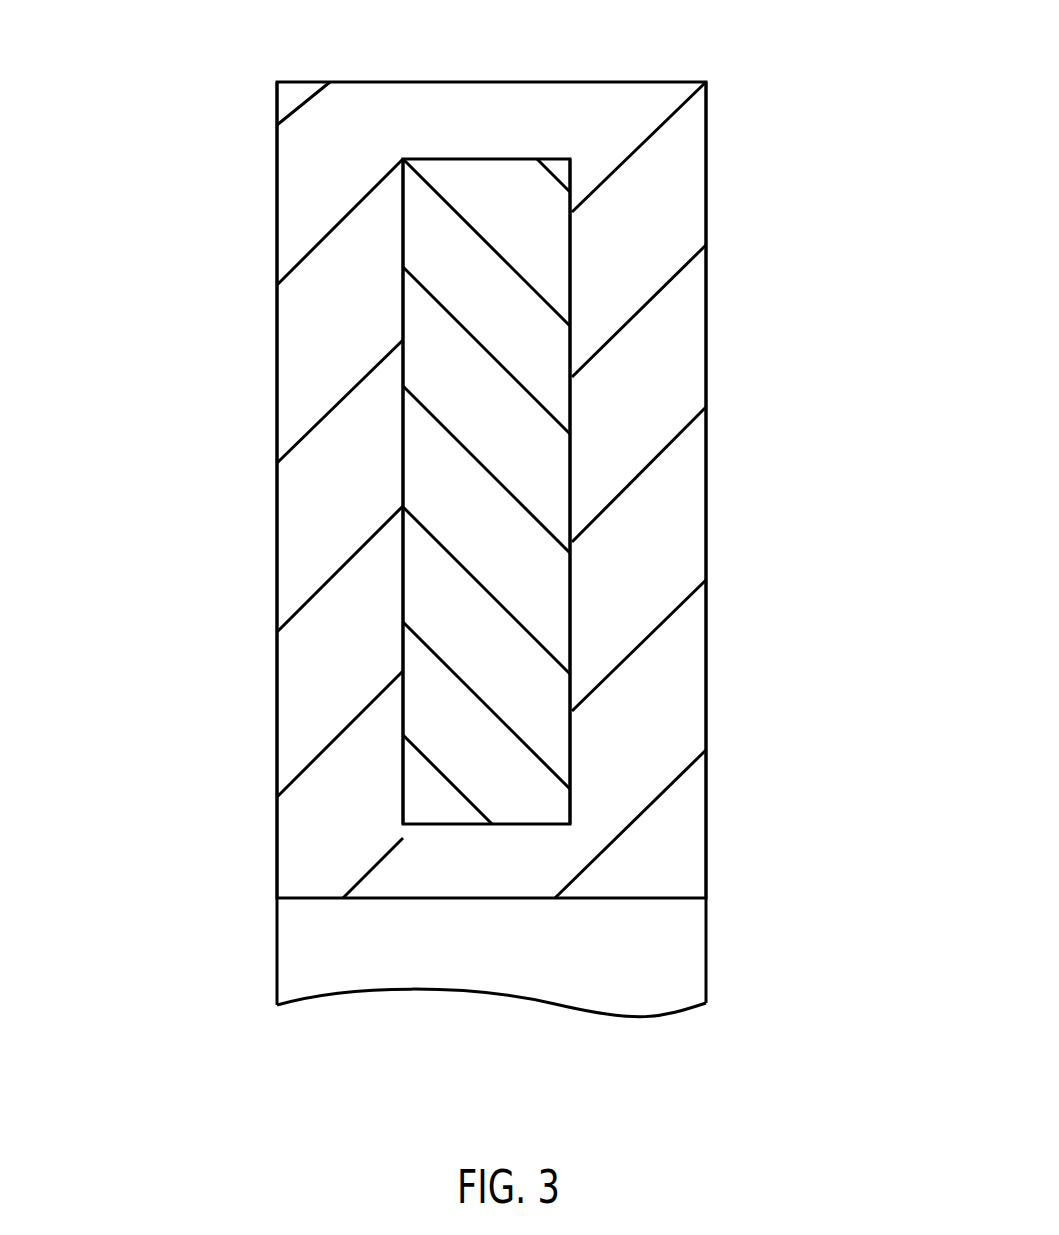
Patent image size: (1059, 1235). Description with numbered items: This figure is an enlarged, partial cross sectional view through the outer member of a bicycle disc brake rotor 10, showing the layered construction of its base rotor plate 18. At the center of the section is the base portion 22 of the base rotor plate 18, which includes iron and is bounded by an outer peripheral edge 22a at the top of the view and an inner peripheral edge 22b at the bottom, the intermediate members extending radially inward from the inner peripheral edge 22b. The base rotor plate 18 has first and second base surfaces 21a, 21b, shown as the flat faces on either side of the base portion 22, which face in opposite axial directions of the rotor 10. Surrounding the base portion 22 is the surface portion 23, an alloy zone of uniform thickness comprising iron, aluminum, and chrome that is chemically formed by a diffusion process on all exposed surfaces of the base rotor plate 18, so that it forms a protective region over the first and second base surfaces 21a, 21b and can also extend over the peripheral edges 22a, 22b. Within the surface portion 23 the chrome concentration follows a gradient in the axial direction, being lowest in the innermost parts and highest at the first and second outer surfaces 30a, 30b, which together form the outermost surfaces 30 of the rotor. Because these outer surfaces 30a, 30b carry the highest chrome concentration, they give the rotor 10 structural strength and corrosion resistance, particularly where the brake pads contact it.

The bicycle disc brake rotor 10 is at (90, 140).
The base rotor plate 18 is at (590, 572).
The first base surface 21a is at (402, 327).
The second base surface 21b is at (574, 262).
The base portion 22 is at (515, 768).
The outer peripheral edge 22a is at (553, 157).
The inner peripheral edge 22b is at (428, 825).
The surface portion 23 is at (650, 377).
The first and second outer surfaces 30 is at (268, 755).
The first outer surface 30a is at (277, 557).
The second outer surface 30b is at (706, 468).